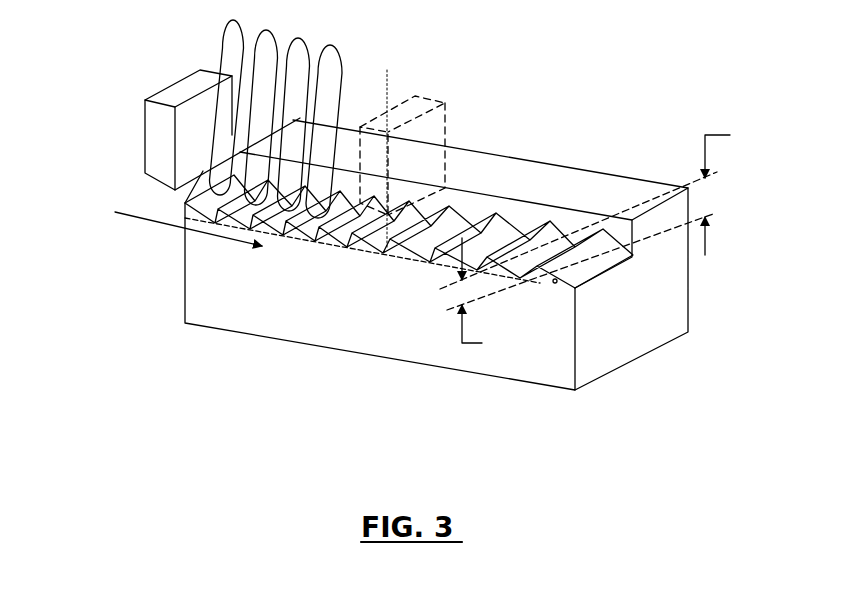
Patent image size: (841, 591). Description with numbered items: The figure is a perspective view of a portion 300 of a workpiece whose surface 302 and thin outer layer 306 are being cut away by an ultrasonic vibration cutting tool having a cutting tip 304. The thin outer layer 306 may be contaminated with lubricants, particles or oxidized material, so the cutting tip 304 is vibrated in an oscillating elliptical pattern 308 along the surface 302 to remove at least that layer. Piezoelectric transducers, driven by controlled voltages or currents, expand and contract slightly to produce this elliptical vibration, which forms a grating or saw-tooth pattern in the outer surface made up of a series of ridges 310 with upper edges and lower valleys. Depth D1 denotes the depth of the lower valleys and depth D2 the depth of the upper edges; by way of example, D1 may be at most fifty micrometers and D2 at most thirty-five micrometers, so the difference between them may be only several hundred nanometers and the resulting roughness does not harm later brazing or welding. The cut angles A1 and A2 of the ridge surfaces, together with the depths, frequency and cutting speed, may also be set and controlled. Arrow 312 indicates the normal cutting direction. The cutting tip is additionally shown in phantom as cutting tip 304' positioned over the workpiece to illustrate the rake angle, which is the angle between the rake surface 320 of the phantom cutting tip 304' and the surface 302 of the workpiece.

The portion of a workpiece 300 is at (652, 335).
The surface 302 is at (545, 183).
The cutting tip 304 is at (144, 130).
The cutting tip shown in phantom 304' is at (443, 140).
The thin outer layer 306 is at (670, 217).
The elliptical pattern 308 is at (342, 66).
The ridges 310 is at (363, 247).
The arrow 312 is at (215, 240).
The rake surface 320 is at (447, 148).
The depth of the lower valleys D1 is at (734, 190).
The depth of the upper edges D2 is at (489, 298).
The cut angle A1 is at (543, 283).
The cut angle A2 is at (555, 283).